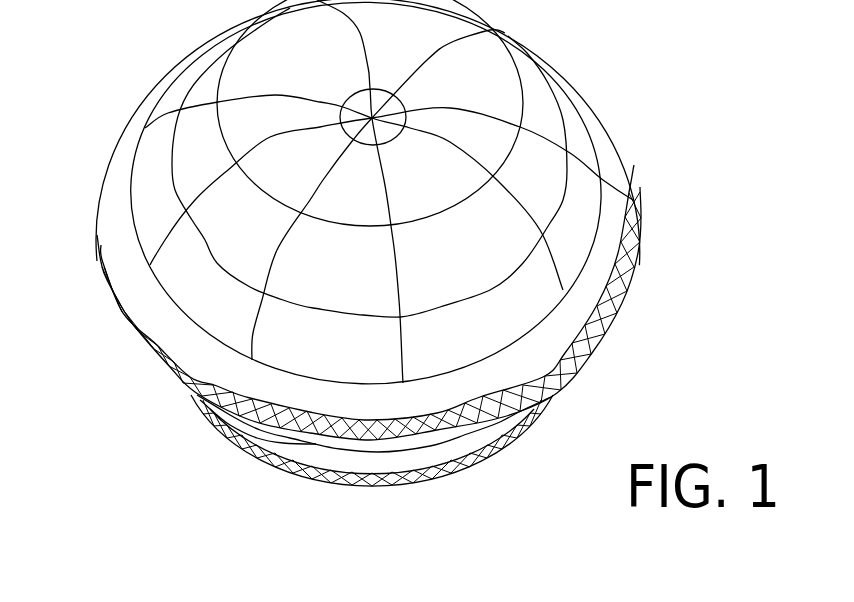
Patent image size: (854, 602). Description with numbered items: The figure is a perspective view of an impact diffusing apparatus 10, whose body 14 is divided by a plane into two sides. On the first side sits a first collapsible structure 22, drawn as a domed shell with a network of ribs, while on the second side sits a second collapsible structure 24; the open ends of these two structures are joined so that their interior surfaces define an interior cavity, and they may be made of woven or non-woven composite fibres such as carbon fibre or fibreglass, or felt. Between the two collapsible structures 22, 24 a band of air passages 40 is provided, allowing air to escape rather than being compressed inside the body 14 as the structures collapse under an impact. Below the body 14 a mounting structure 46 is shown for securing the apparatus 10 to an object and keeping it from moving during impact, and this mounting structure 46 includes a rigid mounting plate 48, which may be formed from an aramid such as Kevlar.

The impact diffusing apparatus 10 is at (695, 98).
The body 14 is at (156, 142).
The first collapsible structure 22 is at (158, 220).
The air passages 40 is at (505, 400).
The mounting structure 46 is at (213, 425).
The second collapsible structure 24 is at (257, 445).
The rigid mounting plate 48 is at (410, 483).